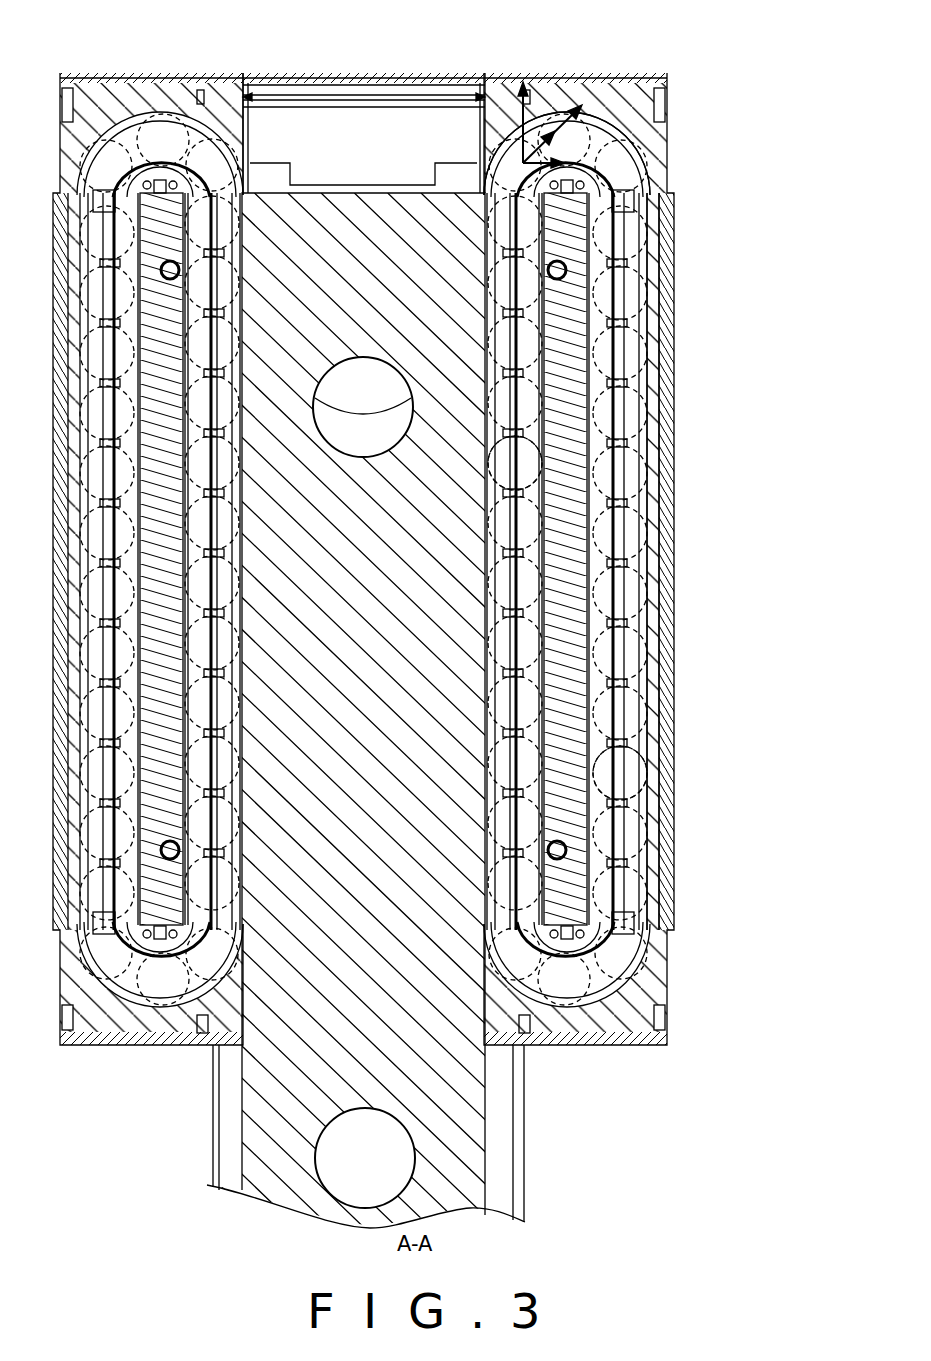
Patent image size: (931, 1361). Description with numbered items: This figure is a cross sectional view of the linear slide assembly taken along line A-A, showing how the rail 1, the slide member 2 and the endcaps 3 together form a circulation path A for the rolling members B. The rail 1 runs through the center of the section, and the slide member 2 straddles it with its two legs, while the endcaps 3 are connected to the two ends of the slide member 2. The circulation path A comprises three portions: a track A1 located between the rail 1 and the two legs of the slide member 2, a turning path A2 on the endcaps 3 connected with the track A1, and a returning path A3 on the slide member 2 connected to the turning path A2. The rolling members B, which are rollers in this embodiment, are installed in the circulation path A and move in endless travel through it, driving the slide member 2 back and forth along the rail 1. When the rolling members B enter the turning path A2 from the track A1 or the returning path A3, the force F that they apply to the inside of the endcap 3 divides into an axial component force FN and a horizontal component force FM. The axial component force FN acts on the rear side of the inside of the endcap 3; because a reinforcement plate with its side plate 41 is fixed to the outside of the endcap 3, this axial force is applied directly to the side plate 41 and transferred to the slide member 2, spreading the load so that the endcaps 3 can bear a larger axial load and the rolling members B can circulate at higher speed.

The rail 1 is at (366, 214).
The slide member 2 is at (163, 222).
The endcap 3 is at (102, 117).
The side plate 41 is at (540, 78).
The circulation path A is at (783, 455).
The track A1 is at (527, 487).
The turning path A2 is at (637, 142).
The returning path A3 is at (645, 320).
The rolling member B is at (640, 760).
The force F is at (546, 178).
The axial component force FN is at (520, 130).
The horizontal component force FM is at (585, 102).